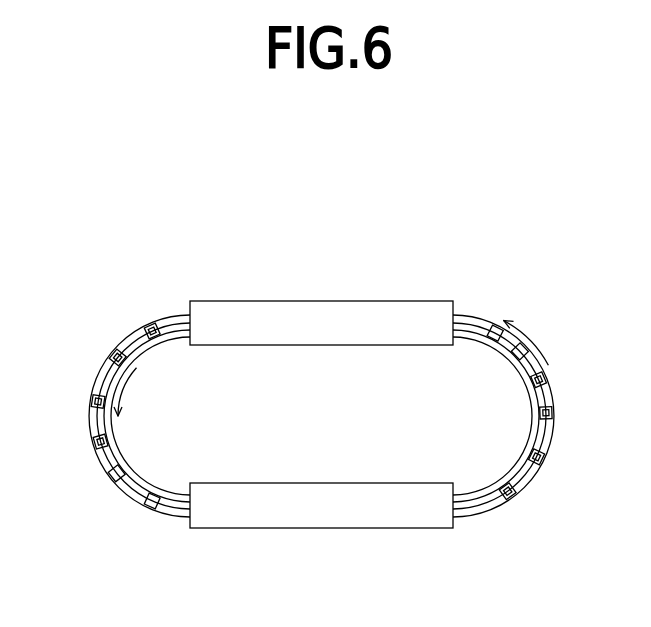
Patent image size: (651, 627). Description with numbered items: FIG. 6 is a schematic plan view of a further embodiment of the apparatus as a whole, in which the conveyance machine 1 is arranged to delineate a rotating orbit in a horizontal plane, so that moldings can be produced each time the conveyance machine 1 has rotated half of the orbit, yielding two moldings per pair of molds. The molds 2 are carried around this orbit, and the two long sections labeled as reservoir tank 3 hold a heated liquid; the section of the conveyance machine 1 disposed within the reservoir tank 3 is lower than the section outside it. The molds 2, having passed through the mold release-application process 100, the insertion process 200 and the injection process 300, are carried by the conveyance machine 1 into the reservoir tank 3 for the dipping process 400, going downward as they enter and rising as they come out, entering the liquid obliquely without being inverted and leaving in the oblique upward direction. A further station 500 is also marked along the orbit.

The conveyance machine 1 is at (99, 468).
The molds 2 is at (550, 379).
The reservoir tank 3 is at (429, 312).
The mold release-application process 100 is at (109, 353).
The insertion process 200 is at (91, 396).
The injection process 300 is at (93, 442).
The dipping process 400 is at (290, 286).
The processing station 500 is at (147, 323).